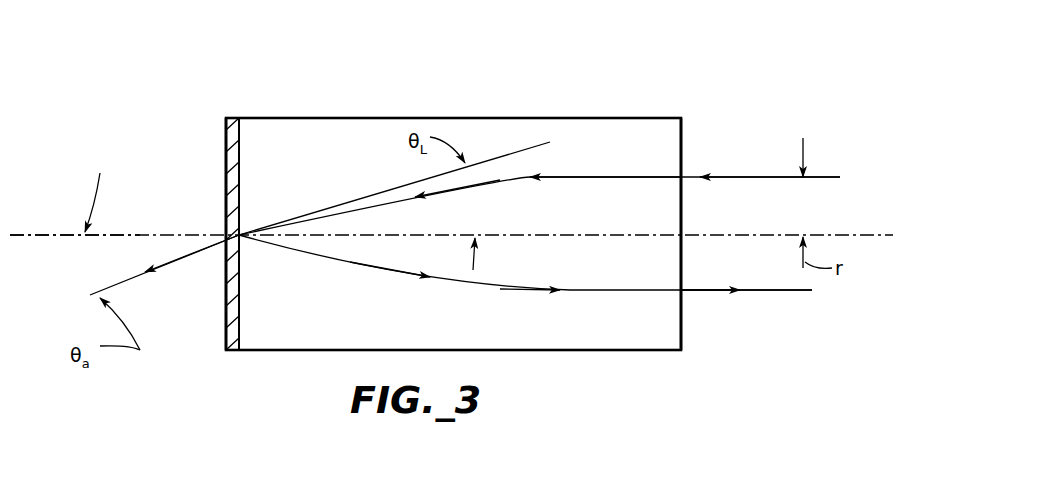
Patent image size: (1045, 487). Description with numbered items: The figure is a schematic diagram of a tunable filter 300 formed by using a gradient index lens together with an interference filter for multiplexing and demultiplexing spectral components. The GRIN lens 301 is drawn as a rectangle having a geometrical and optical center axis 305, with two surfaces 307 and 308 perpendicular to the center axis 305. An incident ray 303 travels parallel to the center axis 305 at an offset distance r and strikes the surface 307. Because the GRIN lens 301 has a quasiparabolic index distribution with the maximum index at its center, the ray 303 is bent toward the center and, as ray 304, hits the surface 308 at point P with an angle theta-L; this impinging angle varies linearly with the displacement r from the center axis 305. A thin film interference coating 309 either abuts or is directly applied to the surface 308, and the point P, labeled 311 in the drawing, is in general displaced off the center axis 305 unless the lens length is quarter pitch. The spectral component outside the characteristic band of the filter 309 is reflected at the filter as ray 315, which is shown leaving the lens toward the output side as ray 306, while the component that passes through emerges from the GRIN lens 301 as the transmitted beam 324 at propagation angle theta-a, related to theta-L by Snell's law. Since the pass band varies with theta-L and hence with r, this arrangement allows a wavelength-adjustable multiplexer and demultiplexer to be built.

The tunable filter 300 is at (690, 62).
The GRIN lens 301 is at (573, 108).
The incident ray 303 is at (820, 165).
The ray 304 is at (508, 178).
The center axis 305 is at (107, 230).
The outgoing light ray 306 is at (783, 300).
The surface 307 is at (697, 133).
The surface 308 is at (243, 155).
The thin film interference coating 309 is at (232, 108).
The aperture point P 311 is at (235, 230).
The ray 315 is at (482, 292).
The transmitted beam 324 is at (128, 292).